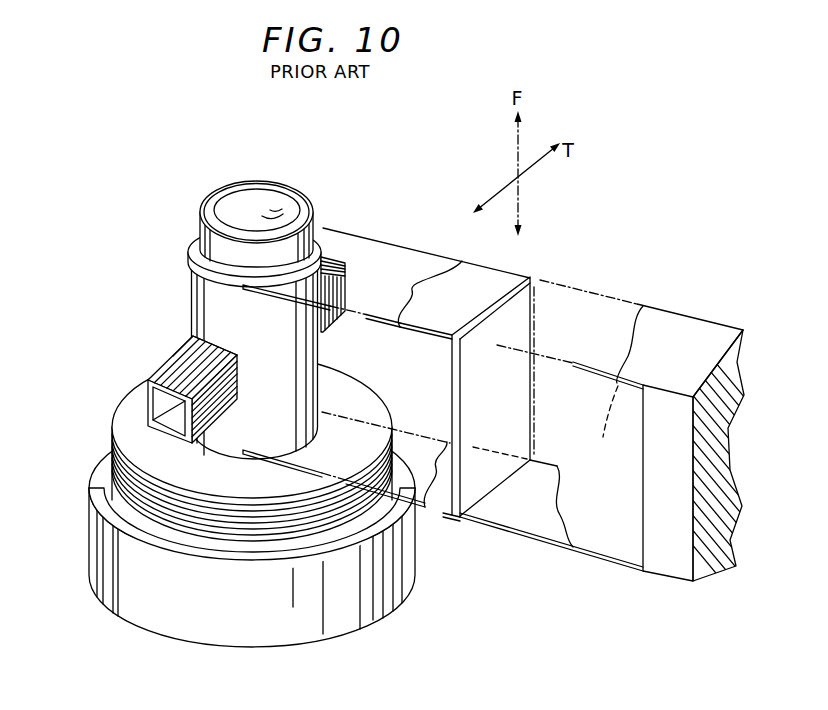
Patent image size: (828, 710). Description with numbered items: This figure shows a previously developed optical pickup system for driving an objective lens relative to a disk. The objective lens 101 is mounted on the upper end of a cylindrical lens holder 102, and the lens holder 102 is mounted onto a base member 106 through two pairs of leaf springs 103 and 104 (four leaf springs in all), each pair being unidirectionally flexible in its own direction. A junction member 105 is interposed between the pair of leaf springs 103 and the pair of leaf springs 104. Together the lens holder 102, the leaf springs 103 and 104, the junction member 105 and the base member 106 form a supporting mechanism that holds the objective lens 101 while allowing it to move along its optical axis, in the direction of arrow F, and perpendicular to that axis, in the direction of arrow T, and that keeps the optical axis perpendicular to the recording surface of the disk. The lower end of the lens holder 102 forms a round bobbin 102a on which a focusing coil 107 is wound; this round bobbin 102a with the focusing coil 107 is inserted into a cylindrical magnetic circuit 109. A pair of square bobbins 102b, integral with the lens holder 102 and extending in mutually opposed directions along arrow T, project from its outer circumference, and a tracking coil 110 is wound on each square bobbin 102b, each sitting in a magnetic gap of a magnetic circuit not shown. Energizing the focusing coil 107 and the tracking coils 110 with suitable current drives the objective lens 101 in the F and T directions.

The objective lens 101 is at (264, 204).
The cylindrical lens holder 102 is at (188, 288).
The round bobbin 102a is at (226, 463).
The square bobbin 102b is at (192, 348).
The leaf springs 103 is at (667, 326).
The leaf springs 104 is at (468, 274).
The junction member 105 is at (528, 308).
The base member 106 is at (673, 562).
The focusing coil 107 is at (102, 494).
The cylindrical magnetic circuit 109 is at (106, 582).
The tracking coil 110 is at (173, 356).